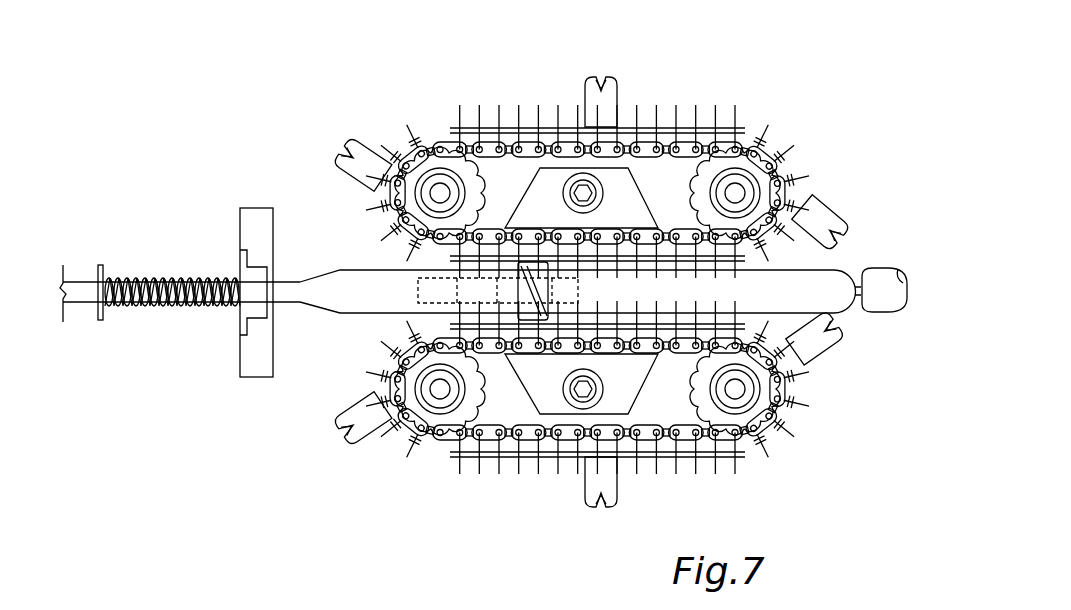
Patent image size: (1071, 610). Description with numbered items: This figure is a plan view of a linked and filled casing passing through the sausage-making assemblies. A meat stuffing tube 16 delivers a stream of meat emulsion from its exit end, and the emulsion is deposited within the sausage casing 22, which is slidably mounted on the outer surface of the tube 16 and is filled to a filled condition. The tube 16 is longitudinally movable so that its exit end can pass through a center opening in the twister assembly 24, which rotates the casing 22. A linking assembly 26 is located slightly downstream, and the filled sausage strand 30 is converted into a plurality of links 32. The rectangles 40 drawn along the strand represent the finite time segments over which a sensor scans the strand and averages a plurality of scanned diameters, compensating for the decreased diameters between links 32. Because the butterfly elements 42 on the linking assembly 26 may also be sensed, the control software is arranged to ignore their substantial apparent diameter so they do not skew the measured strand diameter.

The meat stuffing tube 16 is at (92, 280).
The sausage casing 22 is at (182, 278).
The twister assembly 24 is at (252, 208).
The linking assembly 26 is at (728, 78).
The filled sausage strand 30 is at (847, 265).
The links 32 is at (838, 290).
The rectangles 40 is at (420, 291).
The butterfly elements 42 is at (350, 140).